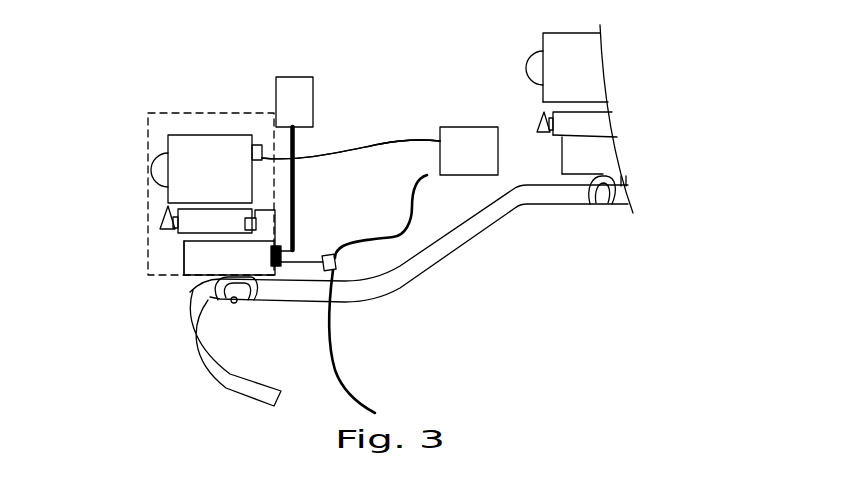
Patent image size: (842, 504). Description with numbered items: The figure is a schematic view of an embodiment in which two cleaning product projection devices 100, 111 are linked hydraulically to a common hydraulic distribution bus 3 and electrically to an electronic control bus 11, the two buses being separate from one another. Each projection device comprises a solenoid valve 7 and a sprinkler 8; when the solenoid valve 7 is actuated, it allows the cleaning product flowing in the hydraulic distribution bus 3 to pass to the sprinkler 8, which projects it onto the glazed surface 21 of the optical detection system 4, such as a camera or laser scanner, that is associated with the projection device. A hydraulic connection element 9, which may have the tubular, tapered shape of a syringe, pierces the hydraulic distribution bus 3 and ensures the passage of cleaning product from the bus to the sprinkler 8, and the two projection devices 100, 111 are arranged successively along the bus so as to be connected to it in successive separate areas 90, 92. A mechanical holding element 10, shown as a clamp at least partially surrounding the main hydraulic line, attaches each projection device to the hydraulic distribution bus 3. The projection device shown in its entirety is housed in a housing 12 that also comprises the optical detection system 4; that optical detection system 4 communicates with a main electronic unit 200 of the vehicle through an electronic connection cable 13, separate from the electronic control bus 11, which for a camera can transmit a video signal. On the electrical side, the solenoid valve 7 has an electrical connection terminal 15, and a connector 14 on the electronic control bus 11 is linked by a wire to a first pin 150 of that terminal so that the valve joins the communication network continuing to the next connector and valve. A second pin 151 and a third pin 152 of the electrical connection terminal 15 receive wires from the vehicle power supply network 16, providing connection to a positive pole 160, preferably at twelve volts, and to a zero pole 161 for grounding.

The hydraulic distribution bus 3 is at (238, 373).
The optical detection system 4 is at (158, 124).
The solenoid valve 7 is at (187, 263).
The sprinkler 8 is at (162, 217).
The hydraulic connection element 9 is at (242, 305).
The mechanical holding element 10 is at (197, 285).
The electronic control bus 11 is at (340, 372).
The housing 12 is at (218, 112).
The electronic connection cable 13 is at (420, 138).
The connector 14 is at (342, 250).
The electrical connection terminal 15 is at (262, 252).
The power supply network 16 is at (294, 163).
The glazed surface 21 is at (150, 163).
The separate area 90 is at (623, 220).
The separate area 92 is at (240, 312).
The projection device 100 is at (620, 133).
The projection device 111 is at (128, 232).
The first pin 150 is at (278, 270).
The second pin 151 is at (304, 258).
The third pin 152 is at (286, 250).
The positive pole 160 is at (300, 158).
The zero pole 161 is at (351, 149).
The main electronic unit 200 is at (469, 151).